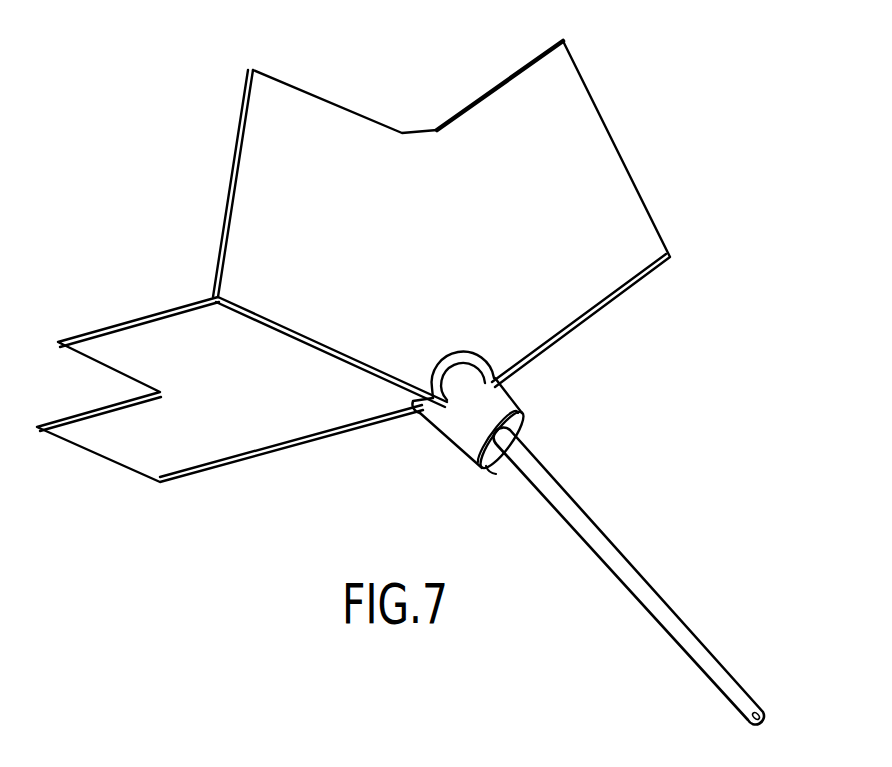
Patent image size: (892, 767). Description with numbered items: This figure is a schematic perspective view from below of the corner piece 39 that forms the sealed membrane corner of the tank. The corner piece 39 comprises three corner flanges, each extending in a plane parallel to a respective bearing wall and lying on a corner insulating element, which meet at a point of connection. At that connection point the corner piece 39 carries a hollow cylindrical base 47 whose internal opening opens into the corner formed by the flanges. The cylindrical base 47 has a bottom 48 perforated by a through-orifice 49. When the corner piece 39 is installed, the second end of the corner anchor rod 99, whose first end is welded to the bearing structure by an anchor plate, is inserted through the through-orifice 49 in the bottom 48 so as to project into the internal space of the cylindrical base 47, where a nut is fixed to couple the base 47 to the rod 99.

The corner piece 39 is at (400, 383).
The hollow cylindrical base 47 is at (518, 398).
The bottom 48 is at (513, 428).
The through-orifice 49 is at (493, 446).
The corner anchor rod 99 is at (679, 620).